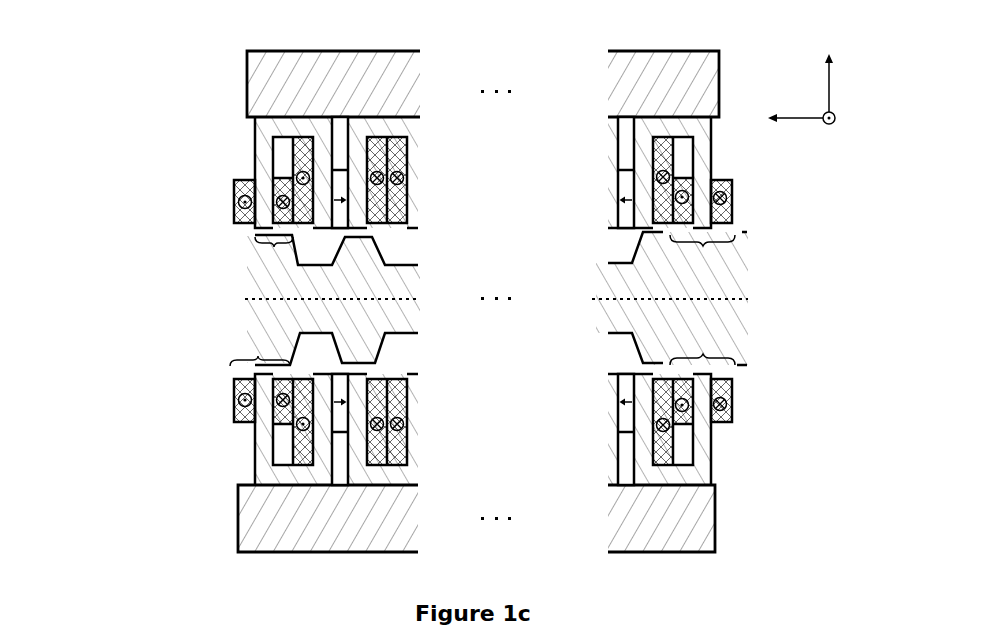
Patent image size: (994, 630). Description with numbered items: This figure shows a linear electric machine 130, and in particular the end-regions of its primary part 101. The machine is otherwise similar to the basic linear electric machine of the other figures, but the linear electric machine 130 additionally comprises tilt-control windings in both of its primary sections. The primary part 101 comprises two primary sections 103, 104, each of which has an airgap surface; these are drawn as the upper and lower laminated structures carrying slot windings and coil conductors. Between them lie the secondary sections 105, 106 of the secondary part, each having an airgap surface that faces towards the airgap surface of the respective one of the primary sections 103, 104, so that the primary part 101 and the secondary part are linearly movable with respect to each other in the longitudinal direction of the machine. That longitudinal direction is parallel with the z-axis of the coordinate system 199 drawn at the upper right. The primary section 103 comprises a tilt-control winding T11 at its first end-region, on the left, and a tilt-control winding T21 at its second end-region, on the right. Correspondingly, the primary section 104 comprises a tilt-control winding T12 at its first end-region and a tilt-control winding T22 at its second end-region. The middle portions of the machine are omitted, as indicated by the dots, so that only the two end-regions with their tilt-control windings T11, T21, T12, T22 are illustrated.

The primary part 101 is at (347, 51).
The primary section 103 is at (228, 43).
The primary section 104 is at (228, 365).
The secondary section 105 is at (378, 288).
The secondary section 106 is at (373, 328).
The linear electric machine 130 is at (443, 301).
The coordinate system 199 is at (812, 100).
The tilt-control winding T11 is at (252, 248).
The tilt-control winding T12 is at (256, 358).
The tilt-control winding T21 is at (682, 247).
The tilt-control winding T22 is at (727, 355).